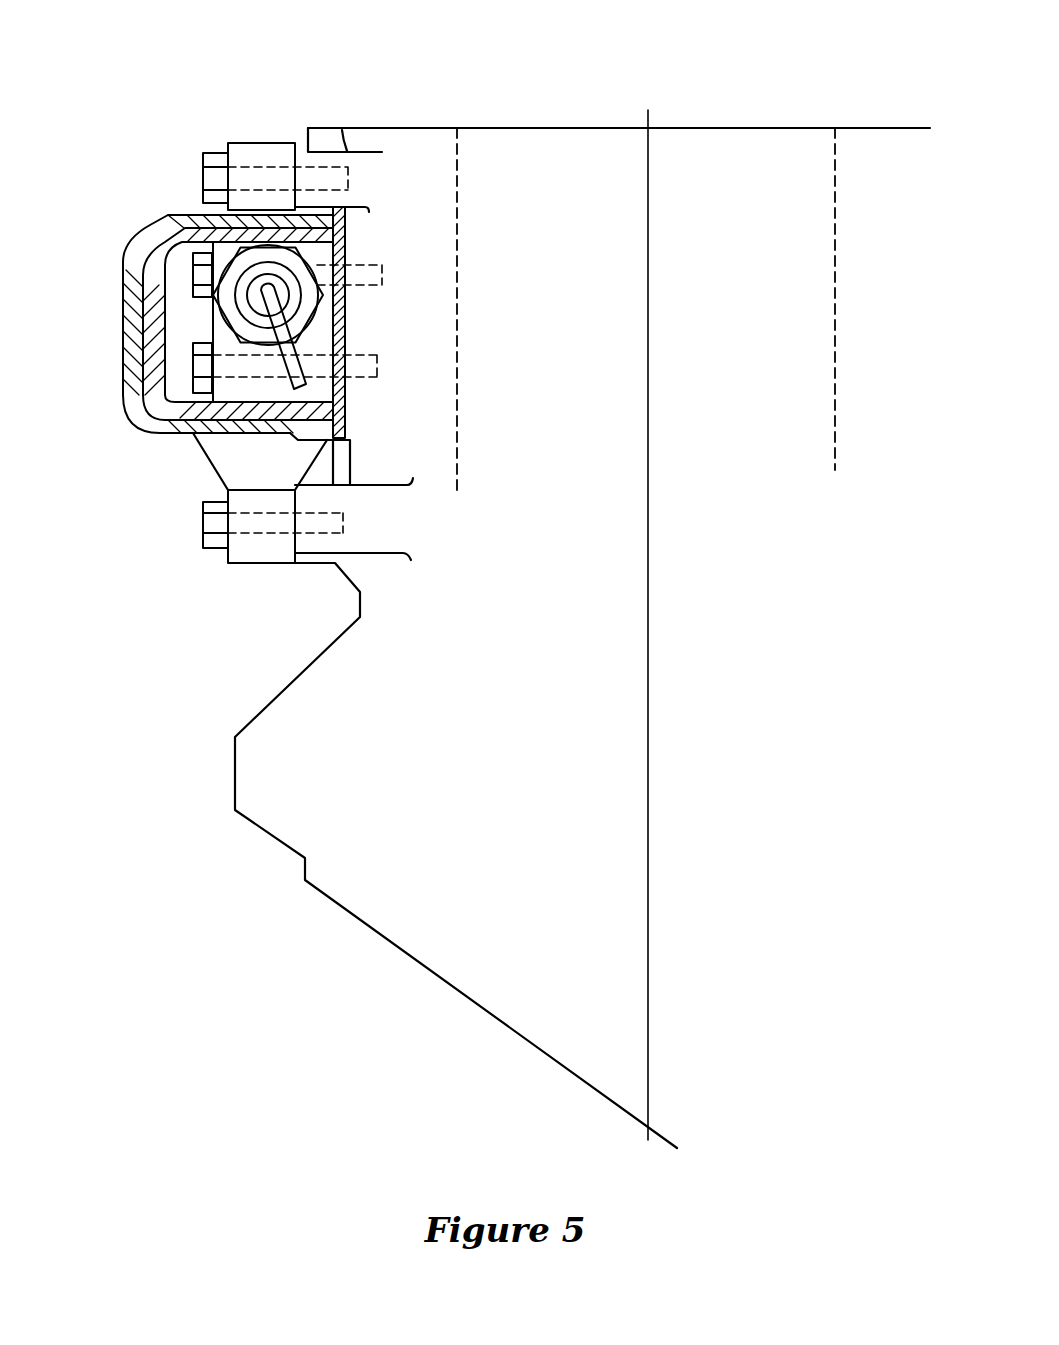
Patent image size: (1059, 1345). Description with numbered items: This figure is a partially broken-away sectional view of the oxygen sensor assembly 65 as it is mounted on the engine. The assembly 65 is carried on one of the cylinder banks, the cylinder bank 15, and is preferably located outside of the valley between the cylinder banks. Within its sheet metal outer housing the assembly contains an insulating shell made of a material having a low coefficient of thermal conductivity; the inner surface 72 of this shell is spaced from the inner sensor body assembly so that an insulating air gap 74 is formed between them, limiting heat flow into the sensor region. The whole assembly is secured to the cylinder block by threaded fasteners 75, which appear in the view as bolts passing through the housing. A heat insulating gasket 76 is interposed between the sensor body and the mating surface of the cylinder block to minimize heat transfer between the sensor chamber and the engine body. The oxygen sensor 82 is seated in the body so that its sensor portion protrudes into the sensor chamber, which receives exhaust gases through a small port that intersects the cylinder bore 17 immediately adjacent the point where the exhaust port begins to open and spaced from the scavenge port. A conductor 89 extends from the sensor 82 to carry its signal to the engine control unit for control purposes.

The cylinder bank 15 is at (573, 148).
The cylinder bore 17 is at (457, 293).
The oxygen sensor assembly 65 is at (136, 238).
The inner surface 72 is at (163, 397).
The insulating air gap 74 is at (212, 332).
The threaded fasteners 75 is at (203, 172).
The heat insulating gasket 76 is at (345, 262).
The oxygen sensor 82 is at (322, 317).
The conductor 89 is at (310, 393).